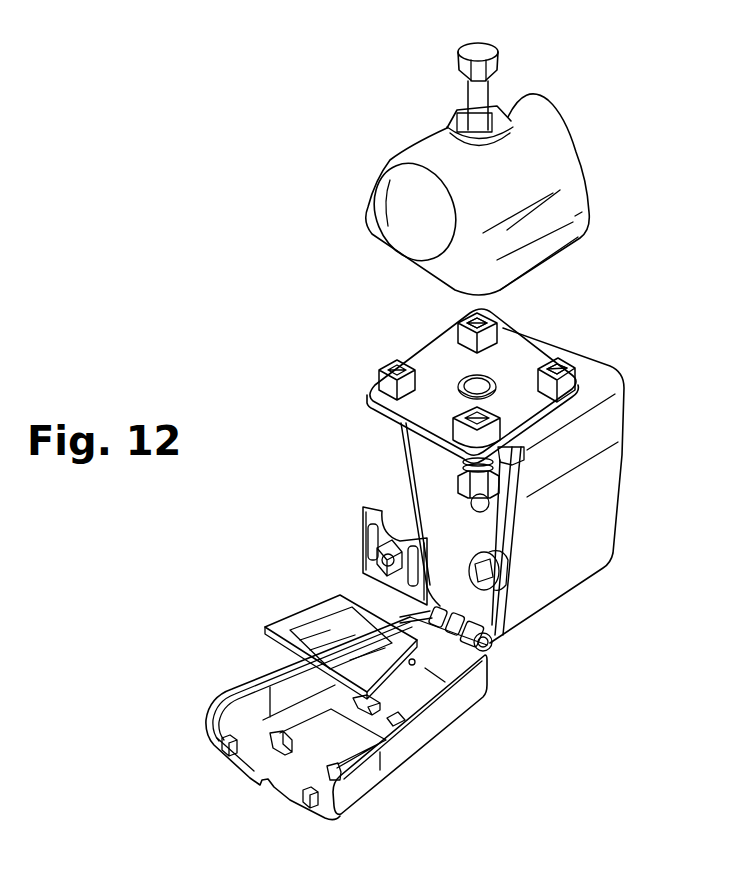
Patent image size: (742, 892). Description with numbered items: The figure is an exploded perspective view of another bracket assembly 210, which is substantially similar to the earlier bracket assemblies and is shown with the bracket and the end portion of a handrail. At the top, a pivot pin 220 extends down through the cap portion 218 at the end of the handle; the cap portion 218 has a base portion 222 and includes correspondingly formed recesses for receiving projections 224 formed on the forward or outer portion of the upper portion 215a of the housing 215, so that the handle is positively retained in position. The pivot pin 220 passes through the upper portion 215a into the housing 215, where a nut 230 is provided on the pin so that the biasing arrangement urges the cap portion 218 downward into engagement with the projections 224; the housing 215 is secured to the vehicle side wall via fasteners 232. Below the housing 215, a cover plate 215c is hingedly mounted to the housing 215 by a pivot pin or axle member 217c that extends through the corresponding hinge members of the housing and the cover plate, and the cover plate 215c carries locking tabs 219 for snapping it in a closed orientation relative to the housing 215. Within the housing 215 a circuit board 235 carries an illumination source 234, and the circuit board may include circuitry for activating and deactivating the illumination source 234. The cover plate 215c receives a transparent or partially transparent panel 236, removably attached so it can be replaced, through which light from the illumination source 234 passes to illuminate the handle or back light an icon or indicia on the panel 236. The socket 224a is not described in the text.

The bracket assembly 210 is at (225, 647).
The pivot pin 220 is at (481, 56).
The cap portion 218 is at (540, 143).
The base portion 222 is at (572, 237).
The upper portion 215a is at (438, 360).
The projections 224 is at (384, 372).
The terminal socket 224a is at (492, 338).
The housing 215 is at (577, 517).
The nut 230 is at (457, 482).
The fasteners 232 is at (494, 588).
The pivot pin 217c is at (491, 647).
The circuit board 235 is at (381, 508).
The illumination source 234 is at (381, 562).
The panel 236 is at (337, 620).
The cover plate 215c is at (424, 726).
The locking tabs 219 is at (215, 746).